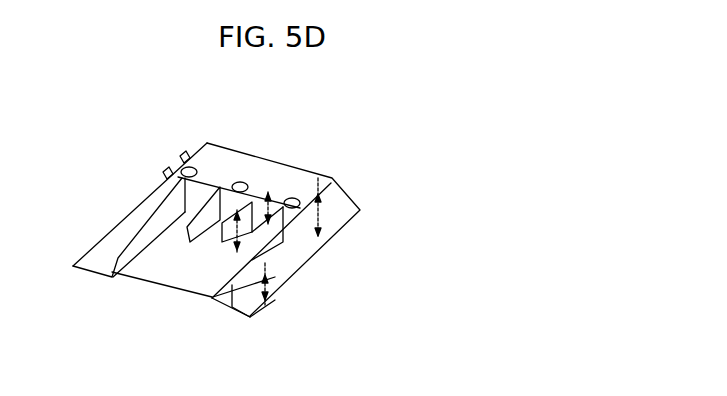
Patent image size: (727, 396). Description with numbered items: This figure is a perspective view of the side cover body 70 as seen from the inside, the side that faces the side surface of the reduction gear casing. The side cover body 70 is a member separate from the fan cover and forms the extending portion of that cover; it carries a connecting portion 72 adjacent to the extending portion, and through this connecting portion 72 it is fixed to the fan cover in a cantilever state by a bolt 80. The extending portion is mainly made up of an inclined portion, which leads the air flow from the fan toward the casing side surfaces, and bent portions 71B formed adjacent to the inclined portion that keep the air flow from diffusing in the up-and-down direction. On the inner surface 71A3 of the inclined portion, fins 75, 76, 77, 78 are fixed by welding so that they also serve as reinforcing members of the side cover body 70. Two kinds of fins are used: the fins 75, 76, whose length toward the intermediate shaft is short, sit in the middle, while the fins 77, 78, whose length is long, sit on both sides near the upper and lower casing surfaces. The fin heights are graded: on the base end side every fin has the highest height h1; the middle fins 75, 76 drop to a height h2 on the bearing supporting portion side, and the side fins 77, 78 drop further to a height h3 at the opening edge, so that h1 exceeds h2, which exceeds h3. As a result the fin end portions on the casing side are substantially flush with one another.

The side cover body 70 is at (268, 154).
The connecting portion 72 is at (274, 180).
The bent portions 71B is at (137, 212).
The fin 75 is at (162, 245).
The fin 76 is at (212, 236).
The fin 77 is at (112, 258).
The fin 78 is at (232, 307).
The inner surface 71A3 is at (170, 275).
The bolt 80 is at (176, 158).
The height h1 is at (318, 182).
The height h2 is at (268, 193).
The height h3 is at (253, 284).